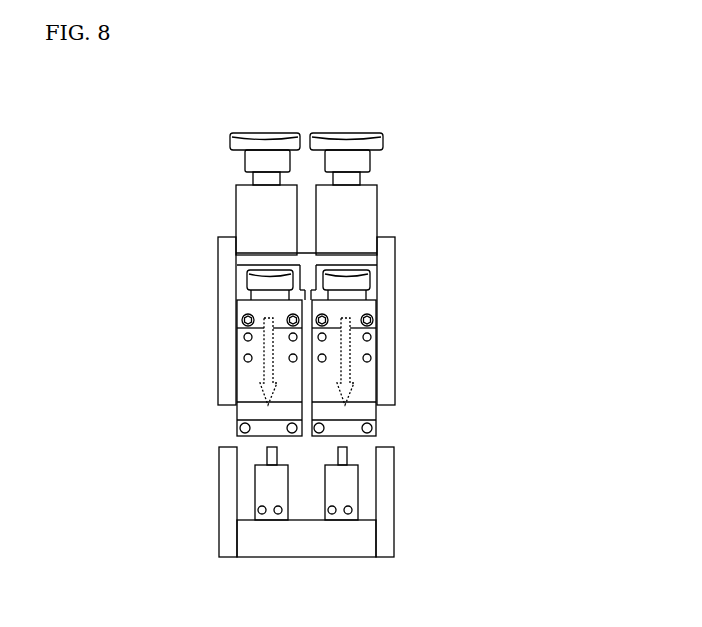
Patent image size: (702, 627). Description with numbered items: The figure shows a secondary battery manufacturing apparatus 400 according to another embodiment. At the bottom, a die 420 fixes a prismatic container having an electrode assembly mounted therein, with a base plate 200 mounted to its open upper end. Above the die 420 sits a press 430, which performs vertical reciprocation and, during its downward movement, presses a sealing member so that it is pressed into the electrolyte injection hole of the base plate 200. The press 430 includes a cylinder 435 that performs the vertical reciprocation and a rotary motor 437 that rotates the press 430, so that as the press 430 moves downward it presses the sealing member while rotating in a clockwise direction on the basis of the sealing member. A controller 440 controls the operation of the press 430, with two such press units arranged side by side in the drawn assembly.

The secondary battery manufacturing apparatus 400 is at (72, 116).
The cylinder 435 is at (248, 165).
The controller 440 is at (262, 212).
The rotary motor 437 is at (256, 283).
The press 430 is at (250, 372).
The base plate 200 is at (262, 453).
The die 420 is at (260, 487).